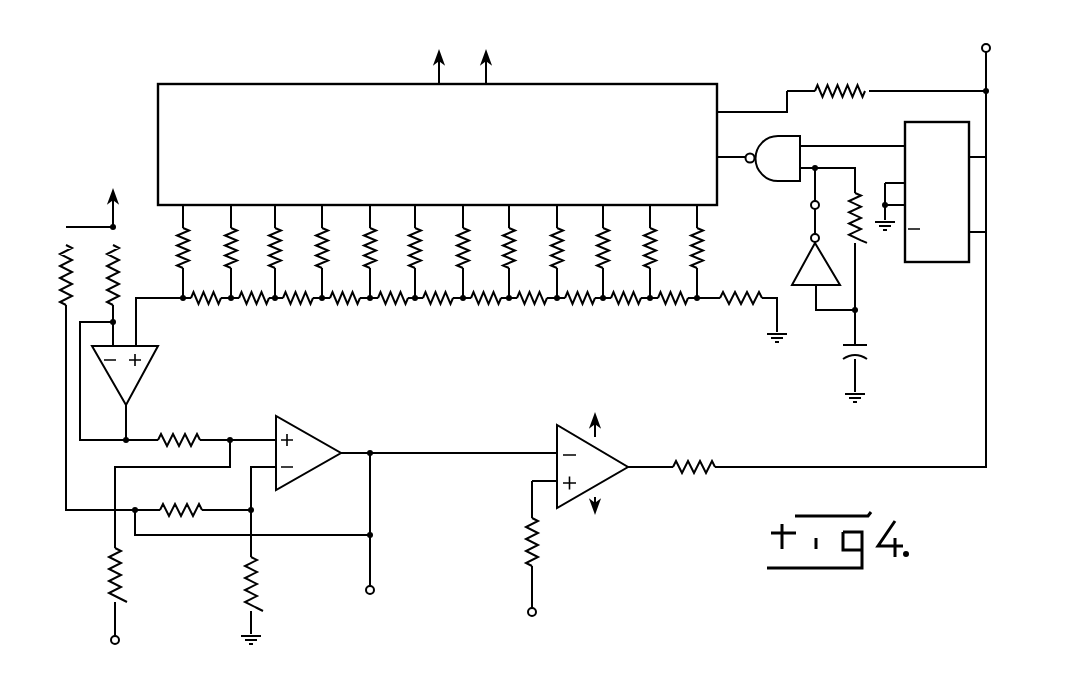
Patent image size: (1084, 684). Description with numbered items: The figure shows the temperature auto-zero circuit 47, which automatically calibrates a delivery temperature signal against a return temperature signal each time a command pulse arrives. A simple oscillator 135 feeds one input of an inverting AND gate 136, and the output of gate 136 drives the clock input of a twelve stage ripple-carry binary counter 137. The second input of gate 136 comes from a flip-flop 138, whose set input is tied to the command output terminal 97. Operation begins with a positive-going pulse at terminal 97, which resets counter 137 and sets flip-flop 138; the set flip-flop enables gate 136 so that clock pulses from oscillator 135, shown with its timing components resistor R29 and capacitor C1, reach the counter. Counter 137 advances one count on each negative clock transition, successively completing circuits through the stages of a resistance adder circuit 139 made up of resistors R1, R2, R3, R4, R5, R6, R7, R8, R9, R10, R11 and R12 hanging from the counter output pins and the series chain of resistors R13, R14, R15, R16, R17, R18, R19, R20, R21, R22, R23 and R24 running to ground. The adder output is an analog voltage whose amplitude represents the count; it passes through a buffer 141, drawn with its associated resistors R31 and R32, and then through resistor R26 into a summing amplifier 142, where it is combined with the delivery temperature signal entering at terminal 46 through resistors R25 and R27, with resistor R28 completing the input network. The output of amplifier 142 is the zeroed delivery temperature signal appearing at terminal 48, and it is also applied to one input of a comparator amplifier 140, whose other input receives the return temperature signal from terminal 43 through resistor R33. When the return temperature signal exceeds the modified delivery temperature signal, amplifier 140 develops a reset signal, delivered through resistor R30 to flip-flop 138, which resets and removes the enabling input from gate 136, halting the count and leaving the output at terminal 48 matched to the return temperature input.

The twelve stage ripple-carry binary counter 137 is at (639, 84).
The flip-flop 138 is at (963, 264).
The inverting AND gate 136 is at (789, 138).
The oscillator 135 is at (803, 264).
The resistance adder circuit 139 is at (457, 322).
The comparator amplifier 140 is at (624, 442).
The buffer 141 is at (150, 361).
The summing amplifier 142 is at (314, 424).
The command output terminal 97 is at (986, 44).
The delivery temperature signal terminal 46 is at (139, 652).
The zeroed delivery temperature output terminal 48 is at (389, 610).
The return temperature signal terminal 43 is at (576, 624).
The temperature auto-zero circuit 47 is at (522, 342).
The capacitor C1 is at (870, 356).
The resistor R1 is at (188, 241).
The resistor R2 is at (236, 241).
The resistor R3 is at (280, 241).
The resistor R4 is at (327, 241).
The resistor R5 is at (375, 241).
The resistor R6 is at (420, 241).
The resistor R7 is at (468, 241).
The resistor R8 is at (514, 241).
The resistor R9 is at (562, 241).
The resistor R10 is at (608, 241).
The resistor R11 is at (655, 241).
The resistor R12 is at (702, 246).
The resistor R13 is at (224, 316).
The resistor R14 is at (269, 321).
The resistor R15 is at (316, 316).
The resistor R16 is at (359, 321).
The resistor R17 is at (404, 316).
The resistor R18 is at (440, 313).
The resistor R19 is at (472, 308).
The resistor R20 is at (519, 308).
The resistor R21 is at (590, 310).
The resistor R22 is at (640, 315).
The resistor R23 is at (670, 310).
The resistor R24 is at (766, 285).
The resistor R25 is at (121, 580).
The resistor R26 is at (205, 418).
The resistor R27 is at (175, 510).
The resistor R28 is at (256, 580).
The resistor R29 is at (858, 200).
The resistor R30 is at (693, 479).
The resistor R31 is at (120, 270).
The resistor R32 is at (57, 245).
The resistor R33 is at (536, 546).